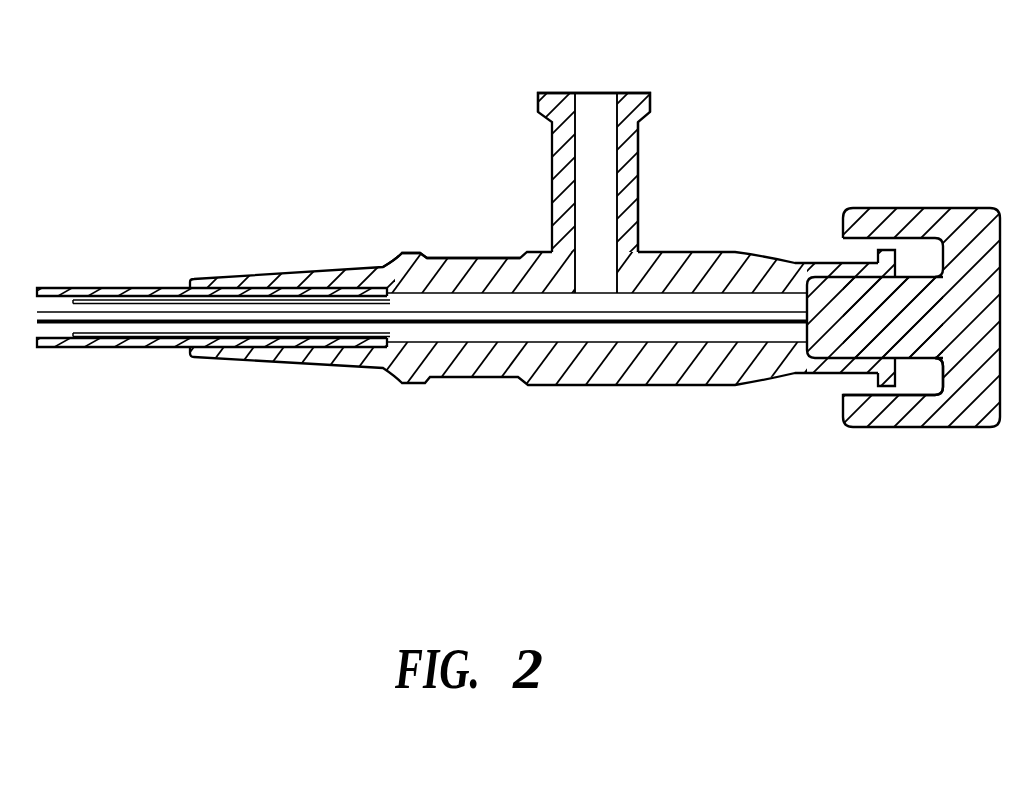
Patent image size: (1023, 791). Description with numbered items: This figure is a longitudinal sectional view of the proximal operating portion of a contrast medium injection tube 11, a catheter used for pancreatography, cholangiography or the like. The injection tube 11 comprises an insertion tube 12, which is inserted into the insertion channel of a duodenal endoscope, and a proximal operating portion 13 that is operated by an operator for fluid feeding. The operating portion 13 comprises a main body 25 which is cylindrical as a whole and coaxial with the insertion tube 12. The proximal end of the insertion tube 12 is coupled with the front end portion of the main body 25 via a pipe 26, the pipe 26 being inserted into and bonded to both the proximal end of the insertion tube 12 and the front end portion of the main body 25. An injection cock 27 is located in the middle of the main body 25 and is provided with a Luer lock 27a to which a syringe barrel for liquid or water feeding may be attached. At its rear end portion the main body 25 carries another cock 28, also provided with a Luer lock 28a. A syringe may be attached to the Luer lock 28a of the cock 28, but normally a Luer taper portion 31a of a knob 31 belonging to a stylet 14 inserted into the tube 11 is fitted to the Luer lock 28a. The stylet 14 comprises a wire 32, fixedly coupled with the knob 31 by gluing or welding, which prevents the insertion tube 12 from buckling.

The contrast medium injection tube 11 is at (599, 82).
The insertion tube 12 is at (127, 280).
The proximal operating portion 13 is at (607, 390).
The stylet 14 is at (660, 330).
The main body 25 is at (488, 262).
The pipe 26 is at (101, 336).
The injection cock 27 is at (641, 143).
The Luer lock 27a is at (651, 103).
The cock 28 is at (817, 374).
The Luer lock 28a is at (875, 256).
The knob 31 is at (942, 427).
The Luer taper portion 31a is at (858, 427).
The wire 32 is at (490, 318).